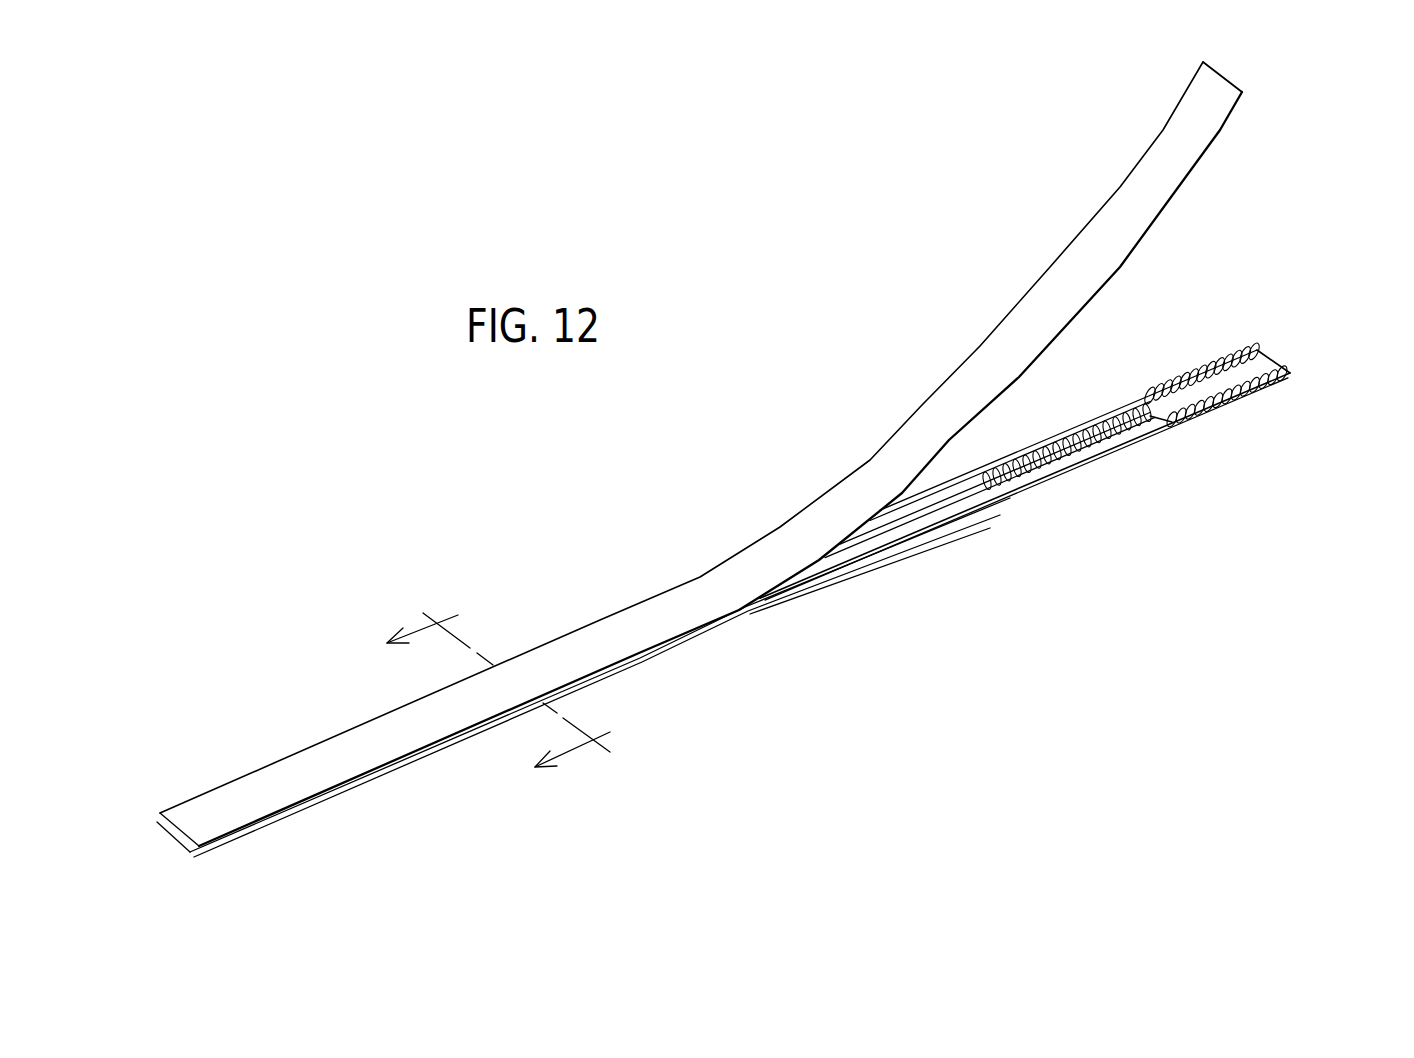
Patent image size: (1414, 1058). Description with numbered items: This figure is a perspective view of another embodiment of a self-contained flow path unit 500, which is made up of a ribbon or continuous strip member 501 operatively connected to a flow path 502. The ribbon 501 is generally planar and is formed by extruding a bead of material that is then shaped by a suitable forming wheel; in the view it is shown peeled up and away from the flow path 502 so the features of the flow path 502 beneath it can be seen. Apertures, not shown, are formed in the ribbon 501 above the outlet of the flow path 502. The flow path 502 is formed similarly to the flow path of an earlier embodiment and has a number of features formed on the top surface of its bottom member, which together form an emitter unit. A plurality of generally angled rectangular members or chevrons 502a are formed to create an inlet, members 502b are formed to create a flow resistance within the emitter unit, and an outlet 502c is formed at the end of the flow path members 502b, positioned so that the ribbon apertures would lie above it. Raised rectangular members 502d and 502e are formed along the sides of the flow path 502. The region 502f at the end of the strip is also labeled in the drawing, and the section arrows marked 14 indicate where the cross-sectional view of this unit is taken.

The self-contained flow path unit 500 is at (1007, 650).
The ribbon 501 is at (888, 441).
The flow path 502 is at (940, 525).
The chevrons 502a is at (1233, 352).
The flow resistance members 502b is at (1043, 452).
The outlet 502c is at (972, 490).
The raised rectangular member 502d is at (900, 505).
The raised rectangular member 502e is at (855, 555).
The end plate 502f is at (1270, 358).
The section line 14- 14 is at (521, 675).